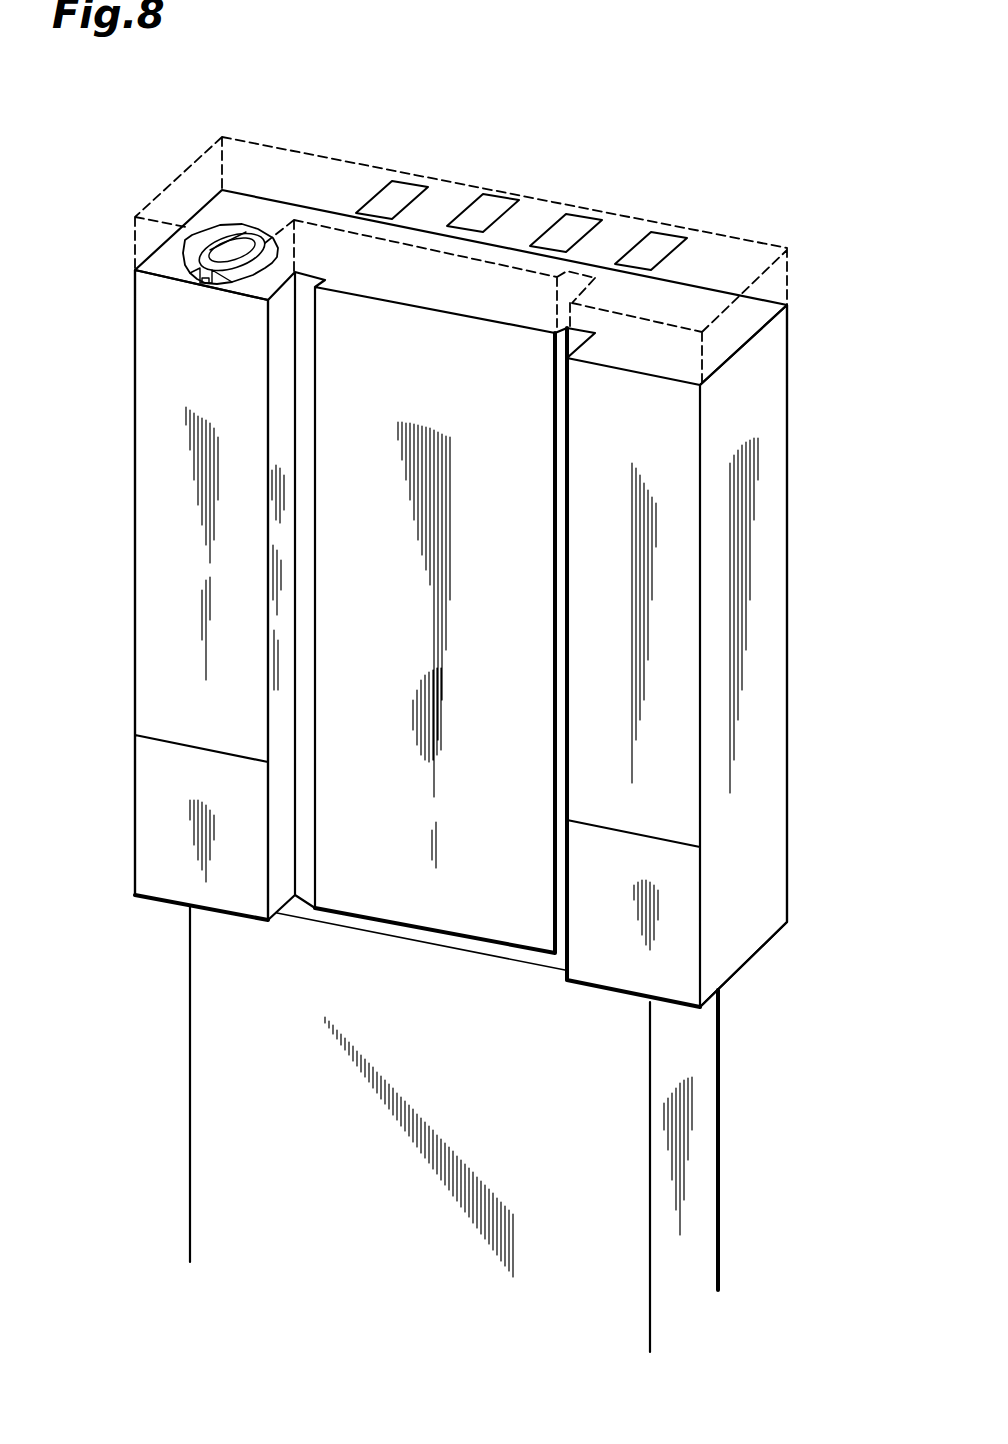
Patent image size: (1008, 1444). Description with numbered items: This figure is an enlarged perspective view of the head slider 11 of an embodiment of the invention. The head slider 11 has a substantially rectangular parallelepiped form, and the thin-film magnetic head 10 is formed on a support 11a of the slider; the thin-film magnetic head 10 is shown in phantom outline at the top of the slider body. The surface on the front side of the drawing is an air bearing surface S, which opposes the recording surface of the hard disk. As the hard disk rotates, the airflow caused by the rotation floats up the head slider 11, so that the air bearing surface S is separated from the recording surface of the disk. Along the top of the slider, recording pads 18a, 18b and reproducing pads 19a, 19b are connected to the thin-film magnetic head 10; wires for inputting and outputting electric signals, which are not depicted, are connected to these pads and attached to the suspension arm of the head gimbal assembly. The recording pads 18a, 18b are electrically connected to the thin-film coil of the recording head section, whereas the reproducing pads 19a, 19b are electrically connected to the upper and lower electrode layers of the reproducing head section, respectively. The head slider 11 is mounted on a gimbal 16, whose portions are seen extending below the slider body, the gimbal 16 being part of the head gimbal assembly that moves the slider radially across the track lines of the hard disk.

The thin-film magnetic head 10 is at (188, 182).
The head slider 11 is at (822, 456).
The support 11a is at (770, 640).
The gimbal 16 is at (700, 1053).
The recording pad 18a is at (575, 223).
The recording pad 18b is at (660, 242).
The reproducing pad 19a is at (402, 193).
The reproducing pad 19b is at (490, 207).
The air bearing surface S is at (160, 497).